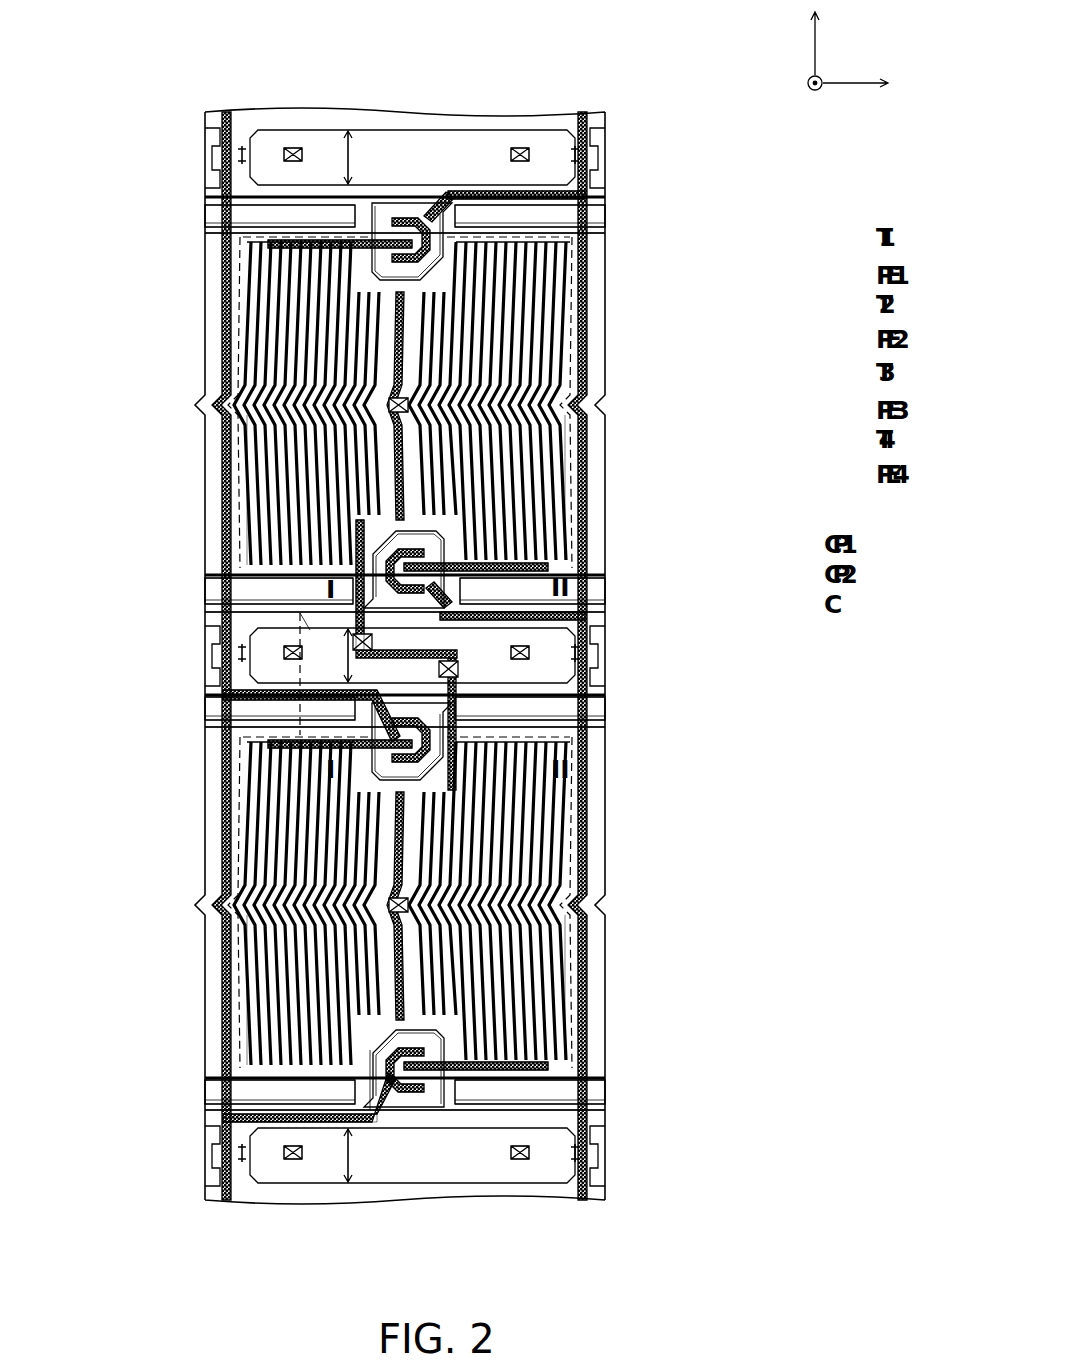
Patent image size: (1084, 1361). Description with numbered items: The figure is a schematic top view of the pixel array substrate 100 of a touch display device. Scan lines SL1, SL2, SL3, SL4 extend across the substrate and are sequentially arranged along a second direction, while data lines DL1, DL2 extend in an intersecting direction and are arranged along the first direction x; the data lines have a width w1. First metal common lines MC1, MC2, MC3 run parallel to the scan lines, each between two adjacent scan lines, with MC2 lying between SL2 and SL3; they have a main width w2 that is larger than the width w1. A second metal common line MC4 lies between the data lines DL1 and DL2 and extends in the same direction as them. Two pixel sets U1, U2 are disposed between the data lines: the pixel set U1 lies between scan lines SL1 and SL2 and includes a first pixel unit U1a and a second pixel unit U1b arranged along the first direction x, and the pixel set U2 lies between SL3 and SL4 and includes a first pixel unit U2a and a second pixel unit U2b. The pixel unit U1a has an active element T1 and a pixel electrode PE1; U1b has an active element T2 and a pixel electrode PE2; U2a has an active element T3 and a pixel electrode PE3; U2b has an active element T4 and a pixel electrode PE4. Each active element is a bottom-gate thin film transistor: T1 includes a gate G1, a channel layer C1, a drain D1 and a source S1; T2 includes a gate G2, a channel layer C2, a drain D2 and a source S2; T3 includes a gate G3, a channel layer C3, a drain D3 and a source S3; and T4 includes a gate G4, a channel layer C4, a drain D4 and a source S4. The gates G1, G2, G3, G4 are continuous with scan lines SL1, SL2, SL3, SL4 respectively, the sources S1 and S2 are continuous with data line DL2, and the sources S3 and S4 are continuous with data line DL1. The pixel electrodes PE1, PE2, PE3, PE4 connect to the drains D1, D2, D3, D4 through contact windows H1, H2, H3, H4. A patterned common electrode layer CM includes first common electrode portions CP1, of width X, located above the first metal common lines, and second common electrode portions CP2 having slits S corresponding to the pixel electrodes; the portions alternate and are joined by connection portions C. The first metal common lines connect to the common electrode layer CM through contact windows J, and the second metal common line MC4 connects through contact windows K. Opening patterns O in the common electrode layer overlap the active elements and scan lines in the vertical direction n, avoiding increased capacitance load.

The data line DL1 is at (230, 118).
The data line DL2 is at (583, 118).
The scan line SL1 is at (230, 216).
The scan line SL2 is at (235, 596).
The scan line SL3 is at (235, 708).
The scan line SL4 is at (235, 1090).
The first common electrode portion CP1 is at (235, 130).
The second common electrode portion CP2 is at (235, 238).
The connection portion C is at (330, 214).
The common electrode layer CM is at (820, 535).
The first metal common line MC1 is at (210, 152).
The first metal common line MC2 is at (210, 640).
The first metal common line MC3 is at (210, 1155).
The second metal common line MC4 is at (405, 400).
The contact window J is at (292, 146).
The opening pattern O is at (444, 204).
The contact window K is at (410, 406).
The width w1 is at (408, 653).
The main width w2 is at (334, 656).
The width X is at (300, 674).
The active element T1 is at (467, 52).
The active element T2 is at (672, 440).
The active element T3 is at (133, 772).
The active element T4 is at (495, 1252).
The gate G1 is at (380, 214).
The channel layer C1 is at (395, 216).
The drain D1 is at (410, 224).
The source S1 is at (424, 228).
The gate G2 is at (416, 582).
The channel layer C2 is at (412, 560).
The drain D2 is at (440, 576).
The source S2 is at (430, 562).
The gate G3 is at (395, 770).
The channel layer C3 is at (405, 762).
The drain D3 is at (420, 770).
The source S3 is at (380, 764).
The gate G4 is at (430, 1076).
The channel layer C4 is at (413, 1086).
The drain D4 is at (405, 1078).
The source S4 is at (398, 1088).
The pixel electrode PE1 is at (240, 300).
The pixel electrode PE2 is at (570, 272).
The pixel electrode PE3 is at (240, 893).
The pixel electrode PE4 is at (570, 1030).
The contact window H1 is at (292, 248).
The contact window H2 is at (470, 567).
The contact window H3 is at (300, 745).
The contact window H4 is at (470, 1066).
The slit S is at (236, 380).
The pixel set U1 is at (820, 238).
The first pixel unit U1a is at (872, 236).
The second pixel unit U1b is at (872, 298).
The pixel set U2 is at (820, 373).
The first pixel unit U2a is at (872, 371).
The second pixel unit U2b is at (872, 433).
The vertical direction n is at (806, 88).
The first direction x is at (904, 82).
The pixel array substrate 100 is at (893, 1279).